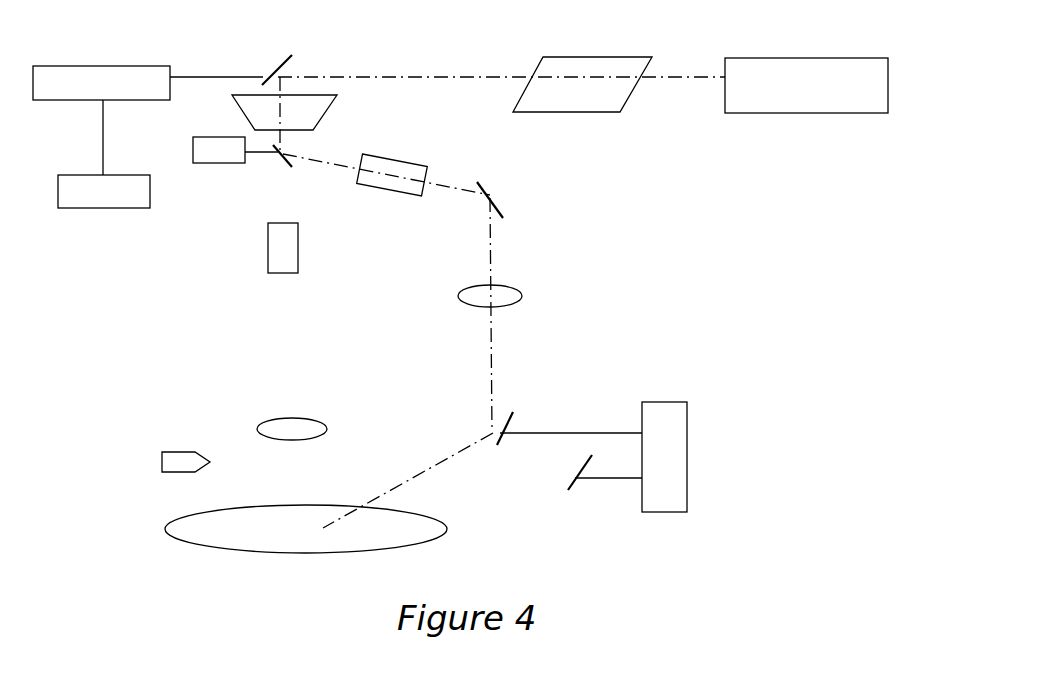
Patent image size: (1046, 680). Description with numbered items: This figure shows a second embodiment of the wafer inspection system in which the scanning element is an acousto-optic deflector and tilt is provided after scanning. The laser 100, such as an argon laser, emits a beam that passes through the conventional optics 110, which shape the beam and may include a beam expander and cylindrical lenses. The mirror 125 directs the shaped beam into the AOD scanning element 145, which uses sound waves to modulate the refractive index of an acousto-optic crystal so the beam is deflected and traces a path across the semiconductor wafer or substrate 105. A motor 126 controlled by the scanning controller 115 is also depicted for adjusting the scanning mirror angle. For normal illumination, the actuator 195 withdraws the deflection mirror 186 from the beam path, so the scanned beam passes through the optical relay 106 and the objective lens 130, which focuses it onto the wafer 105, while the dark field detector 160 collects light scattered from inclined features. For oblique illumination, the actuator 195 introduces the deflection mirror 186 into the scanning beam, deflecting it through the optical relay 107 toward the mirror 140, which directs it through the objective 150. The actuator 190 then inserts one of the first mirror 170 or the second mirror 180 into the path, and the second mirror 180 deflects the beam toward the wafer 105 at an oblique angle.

The laser 100 is at (805, 113).
The semiconductor wafer or substrate 105 is at (440, 527).
The optical relay 106 is at (268, 253).
The optical relay 107 is at (391, 196).
The optics 110 is at (577, 112).
The scanning controller 115 is at (72, 208).
The mirror 125 is at (292, 55).
The motor 126 is at (66, 67).
The objective lens 130 is at (281, 417).
The mirror 140 is at (490, 194).
The acousto-optic deflector (AOD) scanning element 145 is at (330, 108).
The objective 150 is at (523, 292).
The dark field detector 160 is at (199, 456).
The first mirror 170 is at (572, 415).
The second mirror 180 is at (567, 490).
The deflection mirror 186 is at (289, 168).
The actuator 190 is at (678, 453).
The actuator 195 is at (208, 137).